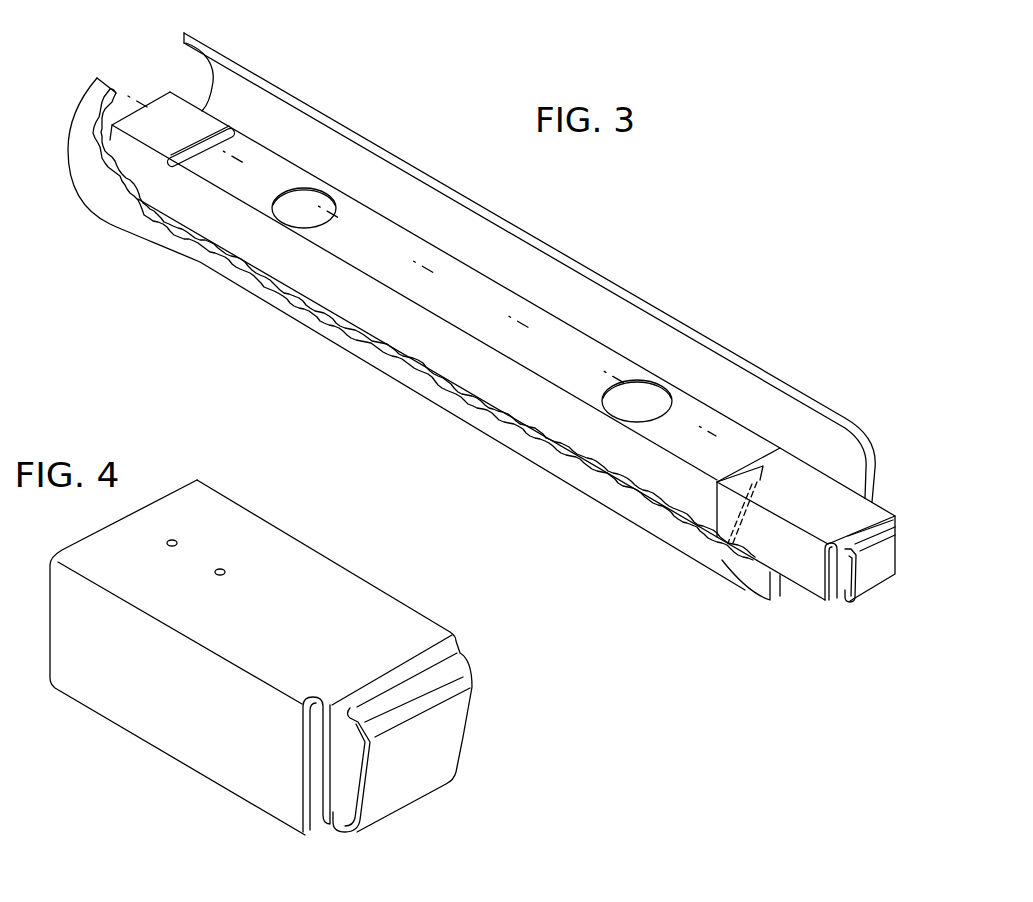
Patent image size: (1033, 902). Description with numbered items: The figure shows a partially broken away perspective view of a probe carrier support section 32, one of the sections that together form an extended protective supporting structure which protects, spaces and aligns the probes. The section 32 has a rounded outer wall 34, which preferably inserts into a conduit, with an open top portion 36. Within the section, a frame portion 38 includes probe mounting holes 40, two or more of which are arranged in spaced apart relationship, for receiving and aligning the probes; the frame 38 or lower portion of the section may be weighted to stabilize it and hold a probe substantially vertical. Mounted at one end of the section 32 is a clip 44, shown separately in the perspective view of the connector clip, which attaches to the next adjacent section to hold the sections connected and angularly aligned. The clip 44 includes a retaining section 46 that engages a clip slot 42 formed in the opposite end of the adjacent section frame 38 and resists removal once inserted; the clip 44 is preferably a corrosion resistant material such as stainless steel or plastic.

In FIG. 3, the probe carrier support section 32 is at (488, 200).
In FIG. 3, the rounded outer wall 34 is at (212, 68).
In FIG. 3, the open top portion 36 is at (110, 73).
In FIG. 3, the frame portion 38 is at (442, 266).
In FIG. 3, the probe mounting holes 40 is at (317, 192).
In FIG. 3, the clip slot 42 is at (216, 129).
In FIG. 3, the clip 44 is at (805, 570).
In FIG. 4, the clip 44 is at (182, 728).
In FIG. 3, the retaining section 46 is at (890, 557).
In FIG. 4, the retaining section 46 is at (442, 741).